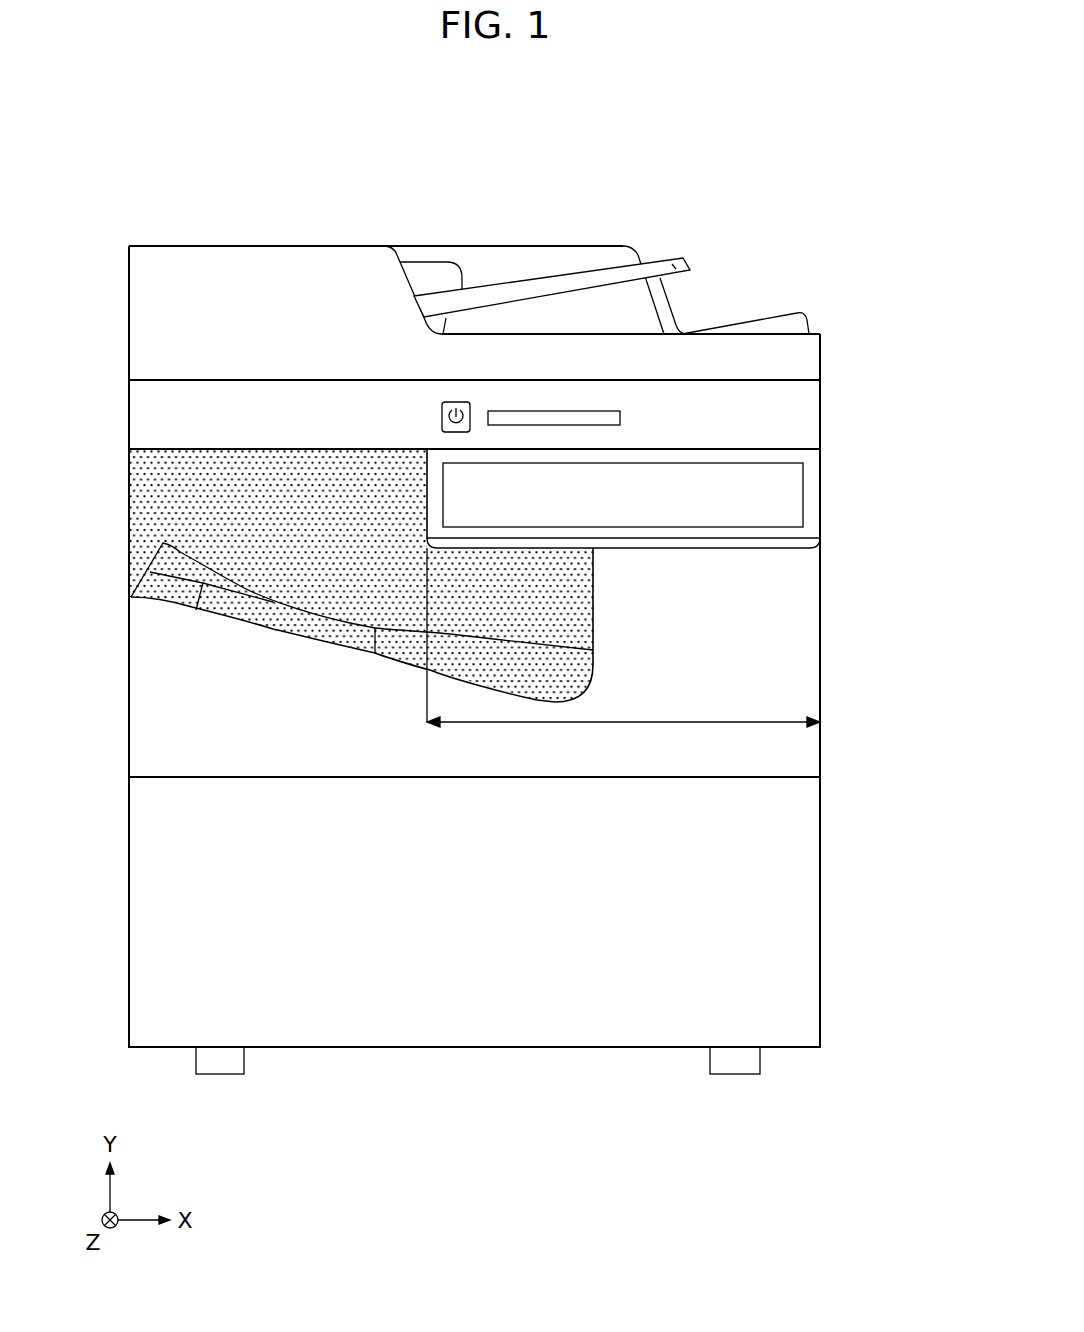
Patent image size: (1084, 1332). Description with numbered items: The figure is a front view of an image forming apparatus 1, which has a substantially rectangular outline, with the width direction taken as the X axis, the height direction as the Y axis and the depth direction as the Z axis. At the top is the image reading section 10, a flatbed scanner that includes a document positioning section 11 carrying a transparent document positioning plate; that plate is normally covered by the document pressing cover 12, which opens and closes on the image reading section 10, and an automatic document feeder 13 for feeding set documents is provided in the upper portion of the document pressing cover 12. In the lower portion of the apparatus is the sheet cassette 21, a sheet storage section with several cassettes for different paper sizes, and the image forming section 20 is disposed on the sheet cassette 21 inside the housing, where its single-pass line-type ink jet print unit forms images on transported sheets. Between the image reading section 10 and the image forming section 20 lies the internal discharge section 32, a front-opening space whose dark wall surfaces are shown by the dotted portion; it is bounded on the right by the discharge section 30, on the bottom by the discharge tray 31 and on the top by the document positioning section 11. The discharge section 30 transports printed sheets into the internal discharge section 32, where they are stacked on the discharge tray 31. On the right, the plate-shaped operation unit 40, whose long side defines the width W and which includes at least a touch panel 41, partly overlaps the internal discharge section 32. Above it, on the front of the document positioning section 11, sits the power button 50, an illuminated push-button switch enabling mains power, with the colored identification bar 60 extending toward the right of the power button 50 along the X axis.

The image forming apparatus 1 is at (879, 135).
The image reading section 10 is at (821, 416).
The document positioning section 11 is at (772, 381).
The document pressing cover 12 is at (821, 338).
The automatic document feeder 13 is at (676, 266).
The image forming section 20 is at (581, 745).
The sheet cassette 21 is at (810, 914).
The discharge section 30 is at (590, 600).
The discharge tray 31 is at (220, 578).
The internal discharge section 32 is at (402, 574).
The operation unit 40 is at (812, 473).
The touch panel 41 is at (777, 511).
The power button 50 is at (463, 401).
The identification bar 60 is at (555, 410).